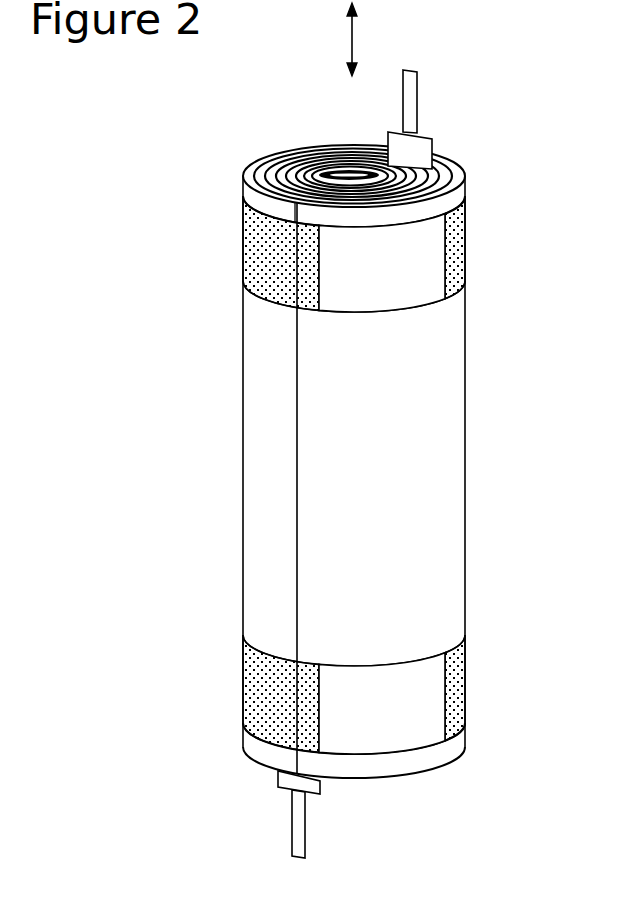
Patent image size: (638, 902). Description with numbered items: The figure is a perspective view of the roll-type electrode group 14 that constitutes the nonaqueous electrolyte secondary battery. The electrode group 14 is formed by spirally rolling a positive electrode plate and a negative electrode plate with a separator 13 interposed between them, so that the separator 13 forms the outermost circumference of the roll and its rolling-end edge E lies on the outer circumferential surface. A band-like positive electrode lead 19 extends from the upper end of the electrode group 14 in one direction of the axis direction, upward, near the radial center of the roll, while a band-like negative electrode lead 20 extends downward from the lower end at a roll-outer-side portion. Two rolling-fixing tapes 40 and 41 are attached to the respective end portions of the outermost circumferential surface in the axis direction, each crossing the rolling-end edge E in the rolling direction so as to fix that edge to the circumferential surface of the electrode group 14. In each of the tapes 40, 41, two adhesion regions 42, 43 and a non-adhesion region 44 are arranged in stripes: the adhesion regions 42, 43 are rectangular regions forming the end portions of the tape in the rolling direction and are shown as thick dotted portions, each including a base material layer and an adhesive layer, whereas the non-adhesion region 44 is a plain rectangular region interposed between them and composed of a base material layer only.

The separator 13 is at (457, 462).
The electrode group 14 is at (370, 464).
The positive electrode lead 19 is at (418, 97).
The negative electrode lead 20 is at (306, 830).
The tape 40 is at (390, 277).
The tape 41 is at (385, 686).
The adhesion region 42 is at (262, 243).
The adhesion region 43 is at (455, 243).
The non-adhesion region 44 is at (357, 290).
The rolling-end edge E is at (297, 462).